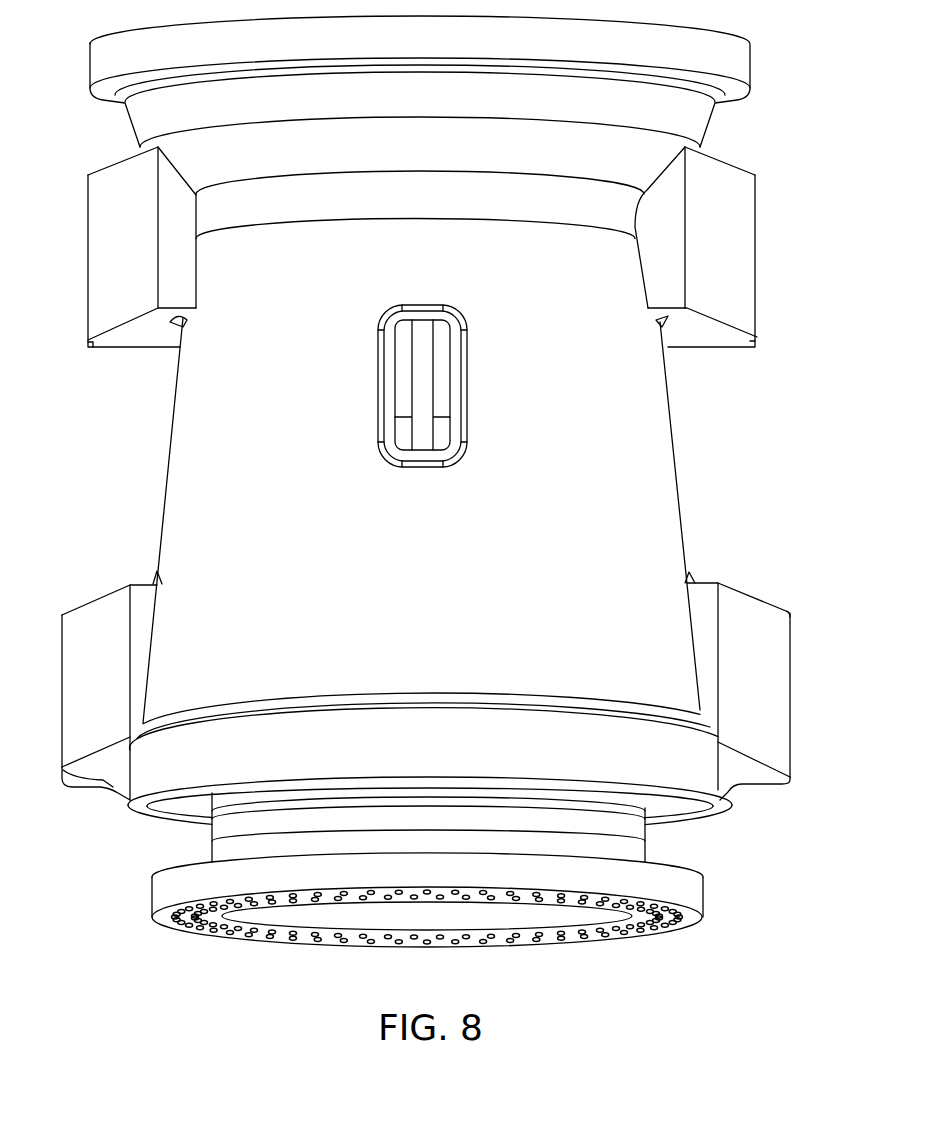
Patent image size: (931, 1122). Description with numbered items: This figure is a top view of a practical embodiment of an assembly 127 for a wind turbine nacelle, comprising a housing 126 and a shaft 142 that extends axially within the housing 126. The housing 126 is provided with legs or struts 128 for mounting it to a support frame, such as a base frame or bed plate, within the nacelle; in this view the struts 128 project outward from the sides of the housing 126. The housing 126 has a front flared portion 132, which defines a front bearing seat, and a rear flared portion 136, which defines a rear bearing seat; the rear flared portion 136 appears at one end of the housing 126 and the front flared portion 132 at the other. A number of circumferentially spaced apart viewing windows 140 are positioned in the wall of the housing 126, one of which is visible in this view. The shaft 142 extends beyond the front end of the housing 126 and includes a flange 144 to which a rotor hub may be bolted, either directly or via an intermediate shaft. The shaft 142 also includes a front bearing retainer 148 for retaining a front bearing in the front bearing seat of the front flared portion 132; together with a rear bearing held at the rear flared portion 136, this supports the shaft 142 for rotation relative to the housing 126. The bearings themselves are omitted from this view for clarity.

The housing 126 is at (667, 457).
The assembly 127 is at (735, 408).
The legs or struts 128 is at (745, 221).
The front flared portion 132 is at (130, 807).
The rear flared portion 136 is at (742, 67).
The viewing windows 140 is at (457, 432).
The shaft 142 is at (638, 835).
The flange 144 is at (695, 895).
The front bearing retainer 148 is at (205, 826).